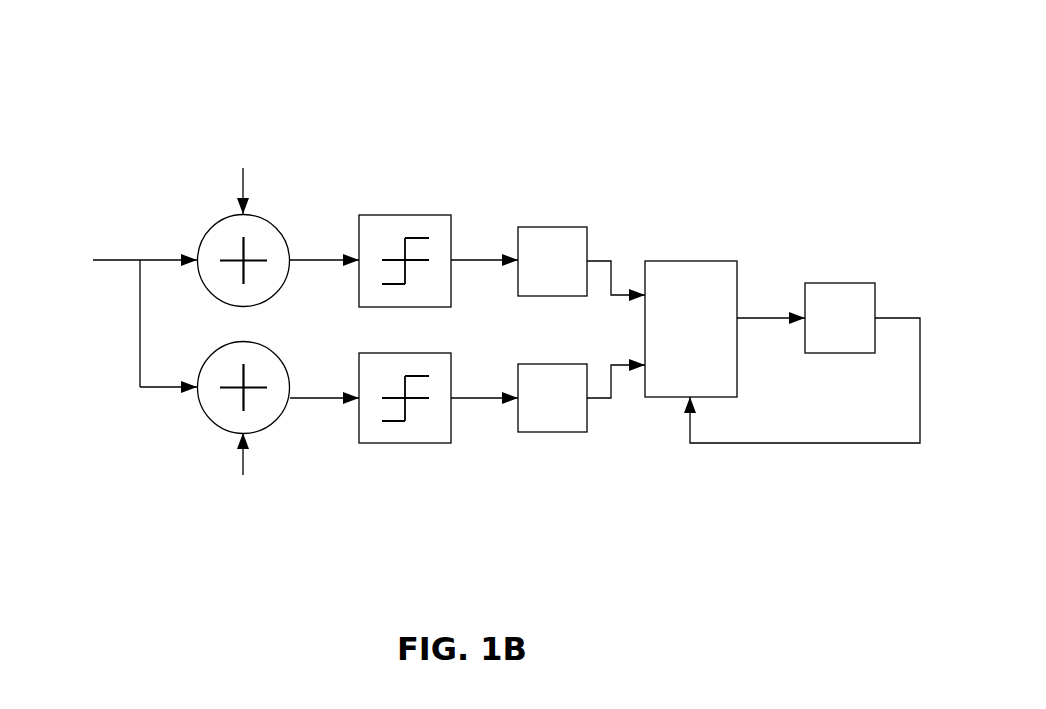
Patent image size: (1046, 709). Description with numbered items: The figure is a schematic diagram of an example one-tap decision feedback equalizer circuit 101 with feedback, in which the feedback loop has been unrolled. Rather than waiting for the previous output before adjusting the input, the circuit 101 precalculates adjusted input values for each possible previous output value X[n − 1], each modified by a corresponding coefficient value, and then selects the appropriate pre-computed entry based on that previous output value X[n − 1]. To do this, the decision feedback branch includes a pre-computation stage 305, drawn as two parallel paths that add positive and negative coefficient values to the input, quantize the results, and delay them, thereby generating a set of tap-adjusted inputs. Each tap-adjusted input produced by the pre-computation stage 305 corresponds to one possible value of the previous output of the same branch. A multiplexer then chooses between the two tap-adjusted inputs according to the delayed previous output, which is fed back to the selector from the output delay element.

The circuit 101 is at (205, 78).
The pre-computation stage 305 is at (565, 530).
The delayed output feedback X[n-1] 1 is at (805, 380).